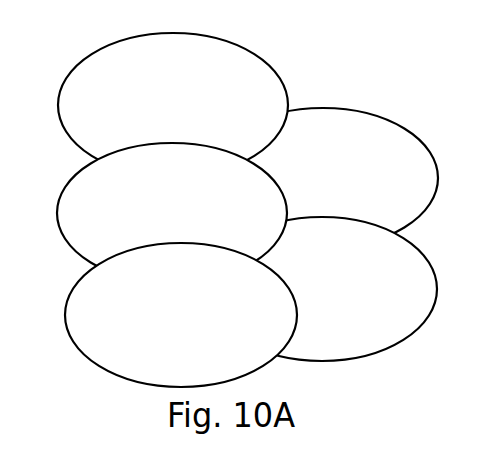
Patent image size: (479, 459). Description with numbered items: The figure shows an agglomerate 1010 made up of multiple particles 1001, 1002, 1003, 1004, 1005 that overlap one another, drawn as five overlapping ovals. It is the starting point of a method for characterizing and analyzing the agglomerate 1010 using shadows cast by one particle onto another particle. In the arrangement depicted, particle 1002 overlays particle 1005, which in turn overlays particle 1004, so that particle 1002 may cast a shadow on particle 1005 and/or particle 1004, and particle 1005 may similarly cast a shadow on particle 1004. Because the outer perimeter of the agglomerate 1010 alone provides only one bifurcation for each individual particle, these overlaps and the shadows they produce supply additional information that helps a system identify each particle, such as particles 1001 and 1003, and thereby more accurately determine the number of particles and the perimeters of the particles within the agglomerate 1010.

The particle 1001 is at (197, 100).
The particle 1002 is at (197, 221).
The particle 1003 is at (197, 333).
The particle 1004 is at (368, 190).
The particle 1005 is at (367, 300).
The agglomerate 1010 is at (334, 74).